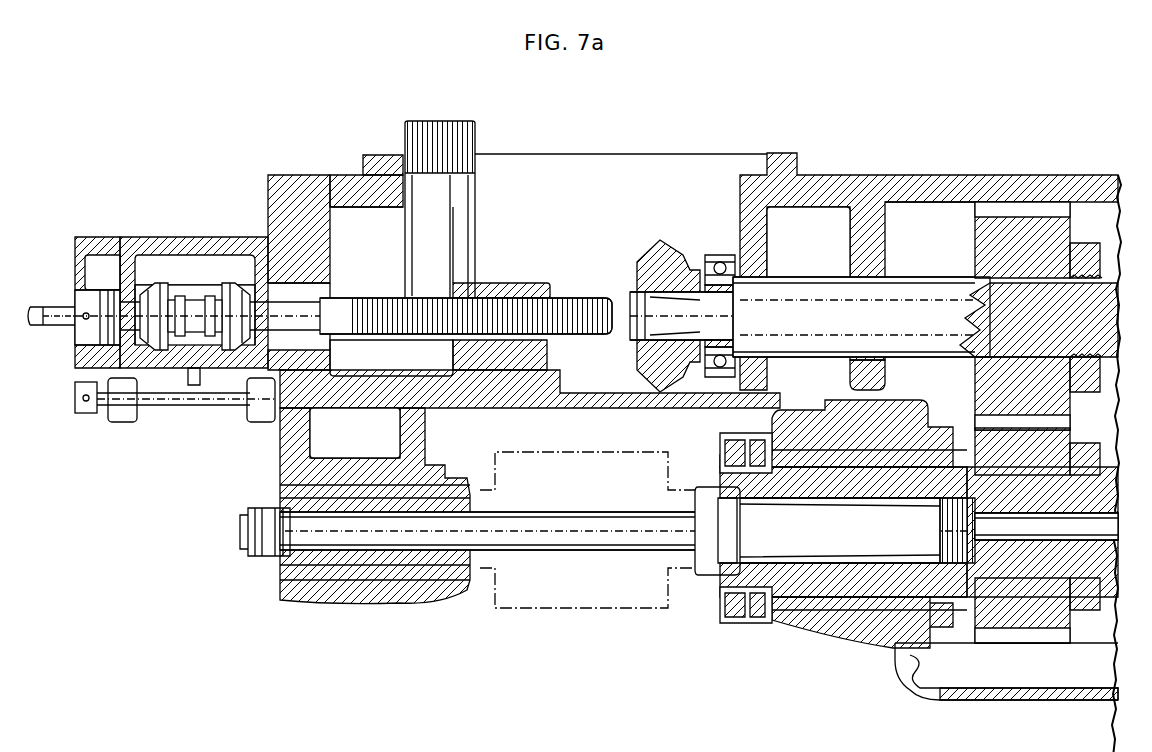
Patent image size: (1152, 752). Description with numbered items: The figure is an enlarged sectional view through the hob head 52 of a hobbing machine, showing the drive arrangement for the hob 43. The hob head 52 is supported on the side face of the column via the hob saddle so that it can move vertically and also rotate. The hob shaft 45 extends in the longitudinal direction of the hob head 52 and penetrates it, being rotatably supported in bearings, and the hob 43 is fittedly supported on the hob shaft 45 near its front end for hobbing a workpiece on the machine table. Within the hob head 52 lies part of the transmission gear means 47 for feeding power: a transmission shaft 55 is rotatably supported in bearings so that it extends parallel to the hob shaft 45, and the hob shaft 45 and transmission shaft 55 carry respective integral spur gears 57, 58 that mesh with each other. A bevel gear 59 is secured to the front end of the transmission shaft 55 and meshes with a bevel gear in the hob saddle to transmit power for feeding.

The hob 43 is at (608, 608).
The hob shaft 45 is at (610, 550).
The transmission gear means 47 is at (1045, 202).
The hob head 52 is at (872, 177).
The transmission shaft 55 is at (808, 283).
The spur gear 57 is at (1003, 643).
The spur gear 58 is at (983, 202).
The bevel gear 59 is at (662, 250).